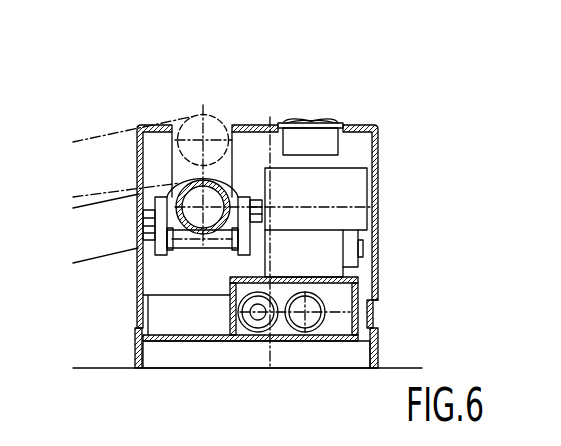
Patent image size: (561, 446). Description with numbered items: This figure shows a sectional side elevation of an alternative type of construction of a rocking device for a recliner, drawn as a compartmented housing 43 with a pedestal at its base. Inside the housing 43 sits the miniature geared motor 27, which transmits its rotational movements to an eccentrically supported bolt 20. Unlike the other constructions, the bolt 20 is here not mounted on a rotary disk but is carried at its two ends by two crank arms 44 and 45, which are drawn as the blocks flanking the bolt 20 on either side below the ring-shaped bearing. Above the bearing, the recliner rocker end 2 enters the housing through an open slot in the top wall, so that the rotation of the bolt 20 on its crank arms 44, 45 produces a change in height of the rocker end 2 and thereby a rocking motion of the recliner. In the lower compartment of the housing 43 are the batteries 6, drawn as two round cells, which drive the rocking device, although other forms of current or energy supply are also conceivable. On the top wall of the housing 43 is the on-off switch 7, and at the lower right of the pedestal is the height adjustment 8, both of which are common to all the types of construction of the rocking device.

The shaft 2 is at (102, 215).
The batteries 6 is at (305, 322).
The on-off switch 7 is at (310, 121).
The height adjustment 8 is at (378, 331).
The bolt 20 is at (197, 250).
The miniature geared motor 27 is at (353, 182).
The housing 43 is at (380, 118).
The crank arm 44 is at (245, 256).
The crank arm 45 is at (160, 252).